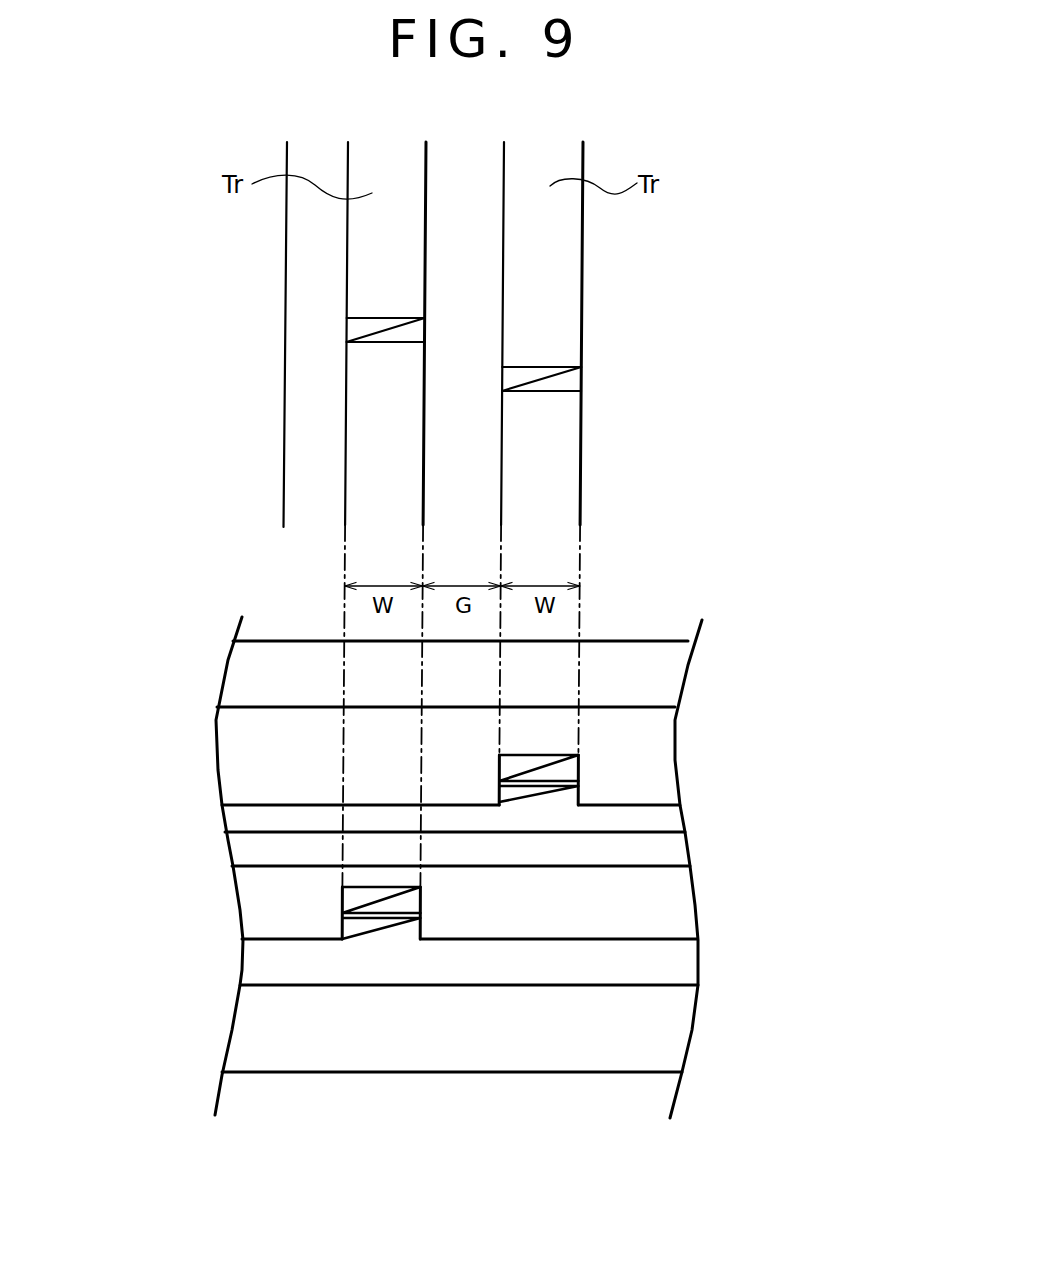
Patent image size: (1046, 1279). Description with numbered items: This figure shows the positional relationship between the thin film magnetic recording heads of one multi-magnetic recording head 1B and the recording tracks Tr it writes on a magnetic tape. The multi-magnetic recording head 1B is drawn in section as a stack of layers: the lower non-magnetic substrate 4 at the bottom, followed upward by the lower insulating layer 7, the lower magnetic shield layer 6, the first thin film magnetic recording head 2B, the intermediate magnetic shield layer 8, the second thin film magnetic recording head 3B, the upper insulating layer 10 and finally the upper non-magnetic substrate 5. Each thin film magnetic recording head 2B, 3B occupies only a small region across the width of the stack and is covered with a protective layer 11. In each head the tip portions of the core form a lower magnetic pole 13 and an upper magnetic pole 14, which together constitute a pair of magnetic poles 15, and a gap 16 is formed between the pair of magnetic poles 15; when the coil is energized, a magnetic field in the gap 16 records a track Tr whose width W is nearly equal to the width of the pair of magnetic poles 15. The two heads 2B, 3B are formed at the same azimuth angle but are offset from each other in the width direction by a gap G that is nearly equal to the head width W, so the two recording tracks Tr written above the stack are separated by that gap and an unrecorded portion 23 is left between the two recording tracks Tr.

The unrecorded portion 23 is at (481, 221).
The multi-magnetic recording head 1B is at (713, 685).
The upper non-magnetic substrate 5 is at (607, 630).
The upper insulating layer 10 is at (657, 678).
The protective layer 11 is at (645, 732).
The intermediate magnetic shield layer 8 is at (657, 852).
The lower magnetic shield layer 6 is at (668, 965).
The lower insulating layer 7 is at (658, 1040).
The lower non-magnetic substrate 4 is at (598, 1090).
The gap 16 is at (493, 787).
The thin film magnetic recording head 3B is at (578, 787).
The thin film magnetic recording head 2B is at (345, 918).
The upper magnetic pole 14 is at (572, 772).
The lower magnetic pole 13 is at (567, 798).
The pair of magnetic poles 15 is at (848, 747).